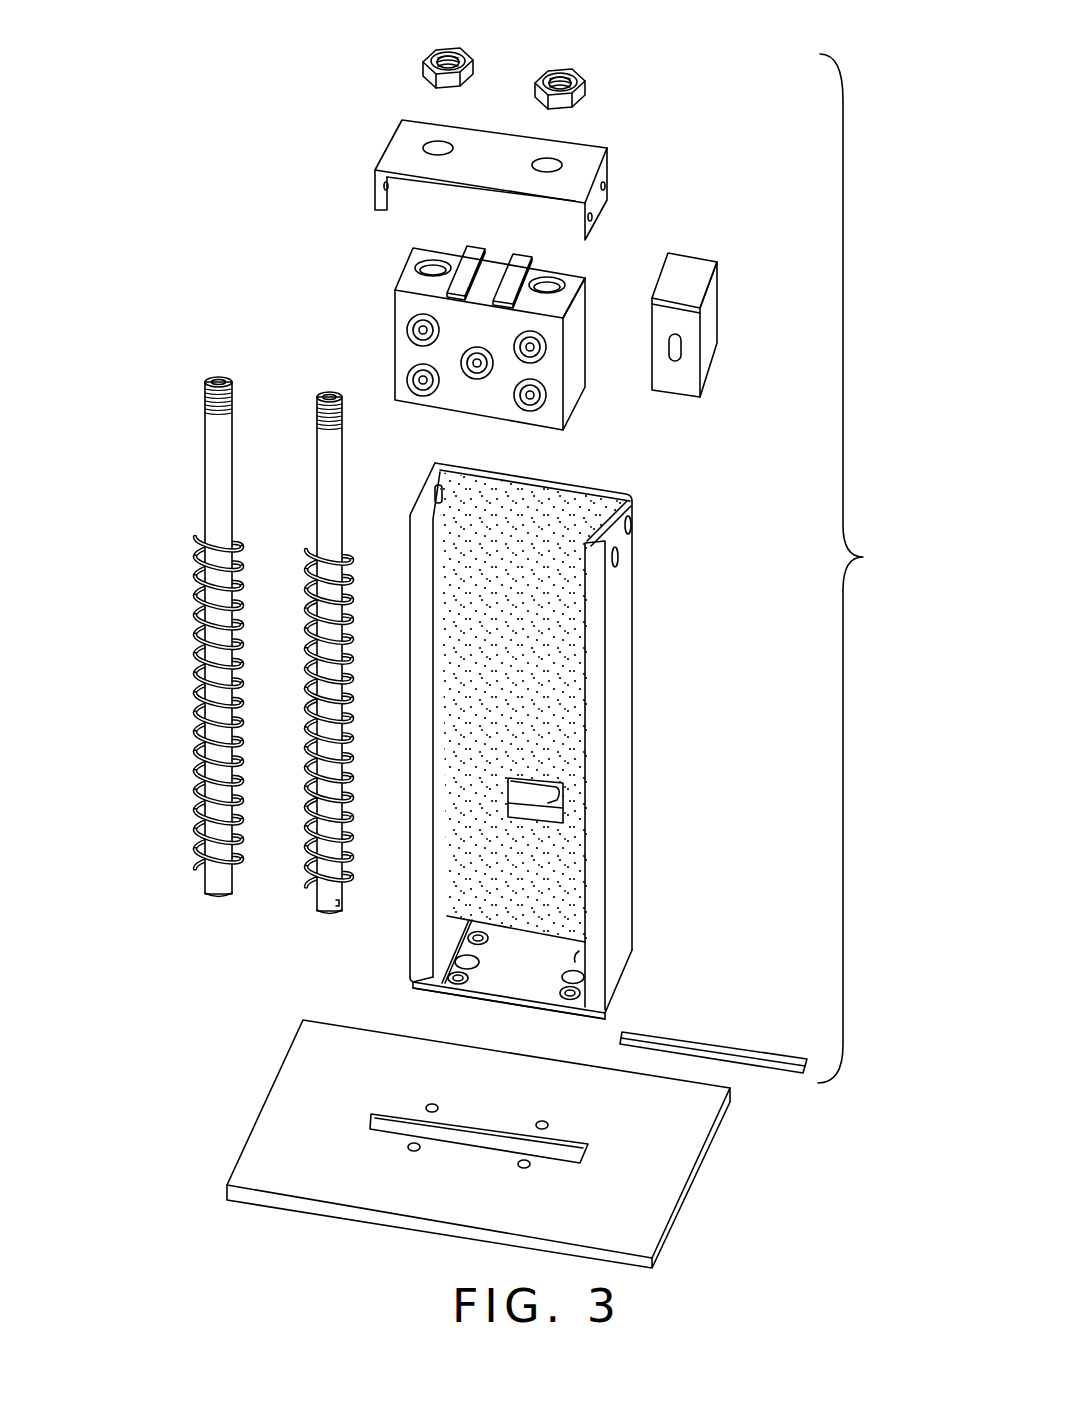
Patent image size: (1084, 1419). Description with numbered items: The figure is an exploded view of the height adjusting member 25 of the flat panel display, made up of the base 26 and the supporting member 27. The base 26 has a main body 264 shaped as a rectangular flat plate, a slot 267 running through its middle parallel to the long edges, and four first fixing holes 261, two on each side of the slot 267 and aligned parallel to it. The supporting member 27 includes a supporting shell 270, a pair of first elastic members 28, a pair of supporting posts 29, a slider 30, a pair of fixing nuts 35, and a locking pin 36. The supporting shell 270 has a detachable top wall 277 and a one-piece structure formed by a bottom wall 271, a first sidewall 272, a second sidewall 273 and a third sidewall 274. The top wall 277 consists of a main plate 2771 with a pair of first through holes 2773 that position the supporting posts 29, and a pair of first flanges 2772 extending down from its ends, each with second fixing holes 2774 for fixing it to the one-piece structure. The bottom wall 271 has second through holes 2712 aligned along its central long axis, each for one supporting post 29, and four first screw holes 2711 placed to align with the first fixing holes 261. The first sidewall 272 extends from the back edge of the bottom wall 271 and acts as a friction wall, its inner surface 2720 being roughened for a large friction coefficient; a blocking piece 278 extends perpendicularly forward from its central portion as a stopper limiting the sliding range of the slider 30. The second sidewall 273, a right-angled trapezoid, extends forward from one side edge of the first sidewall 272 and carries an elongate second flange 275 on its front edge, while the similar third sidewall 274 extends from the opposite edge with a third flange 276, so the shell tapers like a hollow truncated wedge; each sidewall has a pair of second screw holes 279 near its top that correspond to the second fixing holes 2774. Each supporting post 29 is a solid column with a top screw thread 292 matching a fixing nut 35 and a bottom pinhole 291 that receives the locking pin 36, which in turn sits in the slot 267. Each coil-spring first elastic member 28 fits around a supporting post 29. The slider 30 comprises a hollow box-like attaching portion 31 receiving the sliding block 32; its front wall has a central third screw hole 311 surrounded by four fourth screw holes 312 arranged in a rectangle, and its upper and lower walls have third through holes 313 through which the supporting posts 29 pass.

The height adjusting member 25 is at (342, 44).
The supporting member 27 is at (861, 568).
The fixing nut 35 is at (570, 75).
The top wall 277 is at (500, 134).
The main plate 2771 is at (490, 158).
The first flange 2772 is at (380, 202).
The first through hole 2773 is at (433, 150).
The second fixing hole 2774 is at (607, 185).
The slider 30 is at (556, 319).
The attaching portion 31 is at (507, 322).
The third screw hole 311 is at (475, 363).
The fourth screw hole 312 is at (533, 350).
The third through hole 313 is at (435, 272).
The sliding block 32 is at (718, 325).
The supporting post 29 is at (298, 659).
The pinhole 291 is at (340, 902).
The screw thread 292 is at (230, 393).
The first elastic member 28 is at (233, 873).
The supporting shell 270 is at (541, 721).
The bottom wall 271 is at (517, 956).
The first screw hole 2711 is at (452, 988).
The second through hole 2712 is at (453, 957).
The first sidewall 272 is at (533, 477).
The inner surface 2720 is at (590, 518).
The second sidewall 273 is at (677, 723).
The third sidewall 274 is at (429, 497).
The second flange 275 is at (598, 652).
The third flange 276 is at (400, 700).
The blocking piece 278 is at (542, 797).
The second screw hole 279 is at (668, 531).
The locking pin 36 is at (666, 1041).
The base 26 is at (500, 1144).
The first fixing hole 261 is at (527, 1167).
The main body 264 is at (685, 1127).
The slot 267 is at (400, 1130).